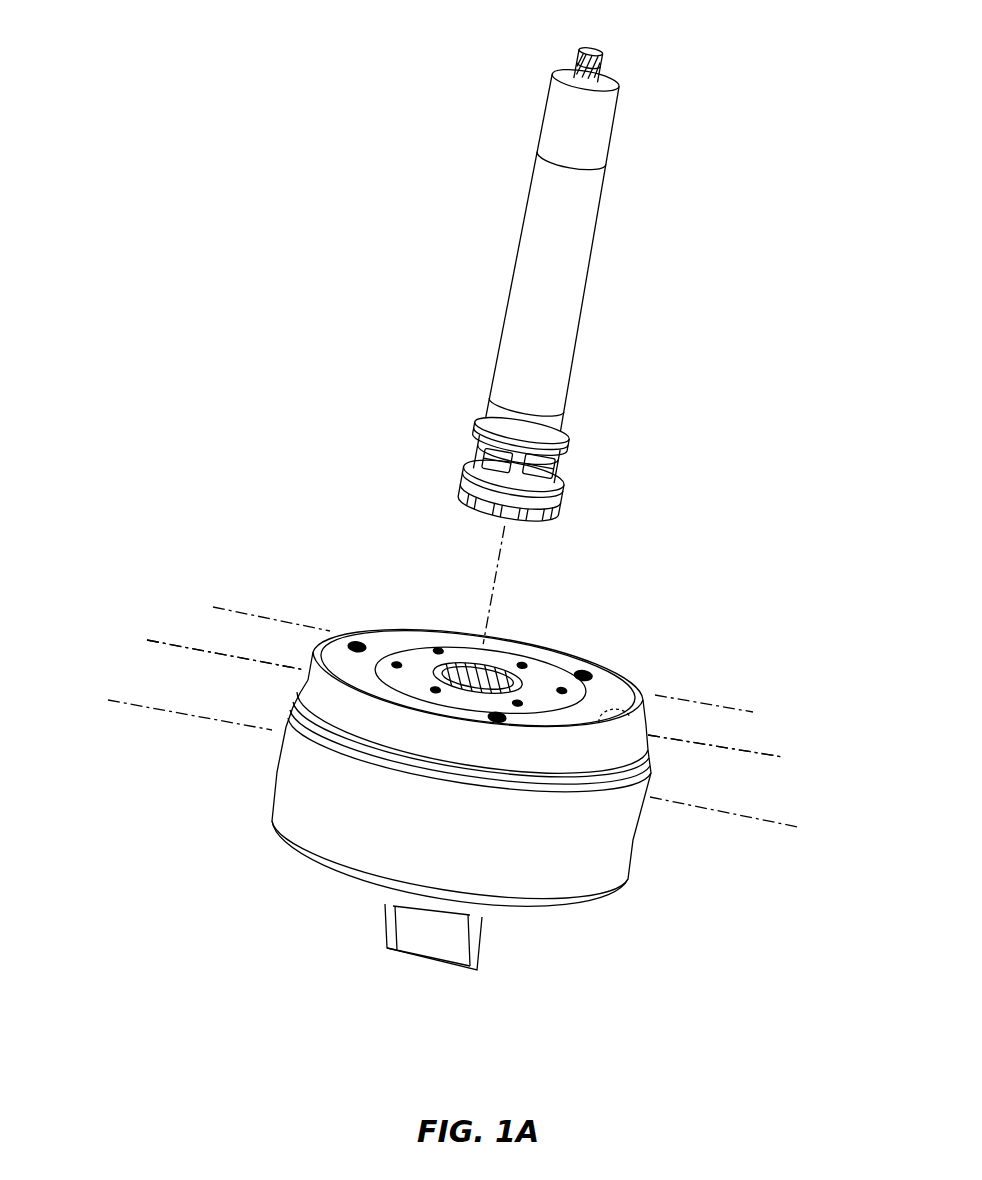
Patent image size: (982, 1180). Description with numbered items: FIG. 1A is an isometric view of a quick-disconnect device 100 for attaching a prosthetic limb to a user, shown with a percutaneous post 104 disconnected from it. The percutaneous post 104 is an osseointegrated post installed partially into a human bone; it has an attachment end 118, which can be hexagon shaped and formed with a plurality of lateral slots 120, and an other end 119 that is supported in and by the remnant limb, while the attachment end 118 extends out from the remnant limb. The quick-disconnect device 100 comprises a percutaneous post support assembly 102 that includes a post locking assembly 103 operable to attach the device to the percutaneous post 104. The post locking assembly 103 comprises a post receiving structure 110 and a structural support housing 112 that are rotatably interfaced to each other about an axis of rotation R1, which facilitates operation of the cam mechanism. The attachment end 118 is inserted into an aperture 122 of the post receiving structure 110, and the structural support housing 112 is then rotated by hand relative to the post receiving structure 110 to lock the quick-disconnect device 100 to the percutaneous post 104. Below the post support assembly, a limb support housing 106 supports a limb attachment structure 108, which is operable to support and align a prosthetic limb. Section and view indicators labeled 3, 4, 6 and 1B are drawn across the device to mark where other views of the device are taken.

The quick-disconnect device 100 is at (159, 520).
The percutaneous post support assembly 102 is at (484, 745).
The post locking assembly 103 is at (471, 629).
The percutaneous post 104 is at (530, 345).
The limb support housing 106 is at (295, 790).
The limb attachment structure 108 is at (417, 933).
The post receiving structure 110 is at (543, 673).
The structural support housing 112 is at (643, 707).
The attachment end 118 is at (514, 435).
The other end 119 is at (588, 193).
The lateral slots 120 is at (467, 460).
The aperture 122 is at (479, 678).
The axis of rotation R1 is at (503, 553).
The section line 3 is at (108, 700).
The section line 4 is at (213, 607).
The section line 6 is at (147, 640).
The view line 1B is at (147, 640).